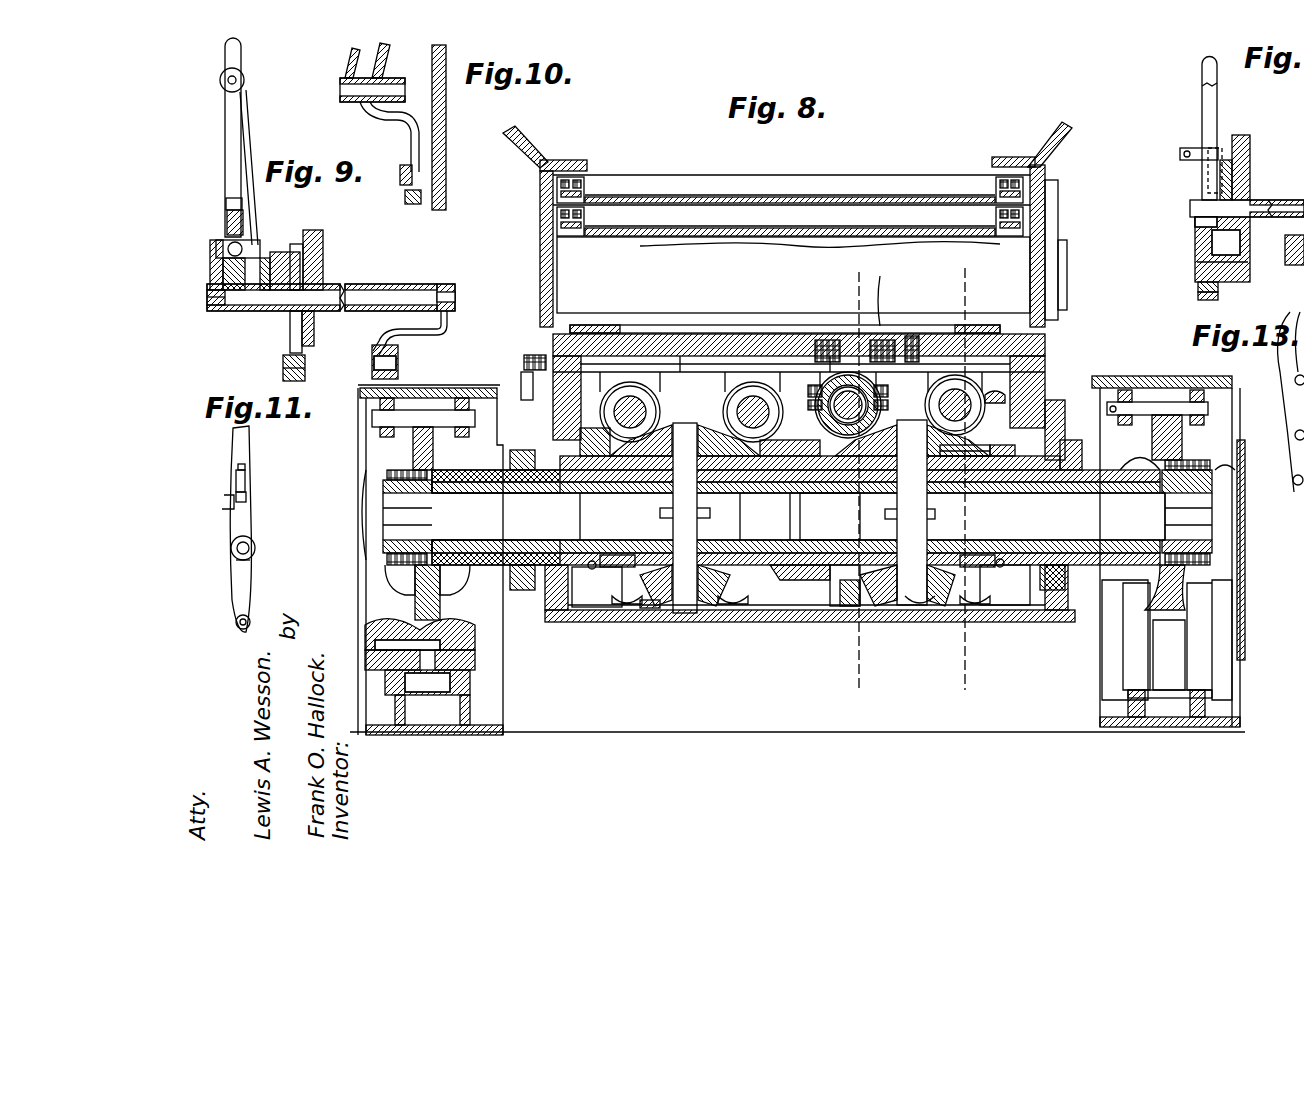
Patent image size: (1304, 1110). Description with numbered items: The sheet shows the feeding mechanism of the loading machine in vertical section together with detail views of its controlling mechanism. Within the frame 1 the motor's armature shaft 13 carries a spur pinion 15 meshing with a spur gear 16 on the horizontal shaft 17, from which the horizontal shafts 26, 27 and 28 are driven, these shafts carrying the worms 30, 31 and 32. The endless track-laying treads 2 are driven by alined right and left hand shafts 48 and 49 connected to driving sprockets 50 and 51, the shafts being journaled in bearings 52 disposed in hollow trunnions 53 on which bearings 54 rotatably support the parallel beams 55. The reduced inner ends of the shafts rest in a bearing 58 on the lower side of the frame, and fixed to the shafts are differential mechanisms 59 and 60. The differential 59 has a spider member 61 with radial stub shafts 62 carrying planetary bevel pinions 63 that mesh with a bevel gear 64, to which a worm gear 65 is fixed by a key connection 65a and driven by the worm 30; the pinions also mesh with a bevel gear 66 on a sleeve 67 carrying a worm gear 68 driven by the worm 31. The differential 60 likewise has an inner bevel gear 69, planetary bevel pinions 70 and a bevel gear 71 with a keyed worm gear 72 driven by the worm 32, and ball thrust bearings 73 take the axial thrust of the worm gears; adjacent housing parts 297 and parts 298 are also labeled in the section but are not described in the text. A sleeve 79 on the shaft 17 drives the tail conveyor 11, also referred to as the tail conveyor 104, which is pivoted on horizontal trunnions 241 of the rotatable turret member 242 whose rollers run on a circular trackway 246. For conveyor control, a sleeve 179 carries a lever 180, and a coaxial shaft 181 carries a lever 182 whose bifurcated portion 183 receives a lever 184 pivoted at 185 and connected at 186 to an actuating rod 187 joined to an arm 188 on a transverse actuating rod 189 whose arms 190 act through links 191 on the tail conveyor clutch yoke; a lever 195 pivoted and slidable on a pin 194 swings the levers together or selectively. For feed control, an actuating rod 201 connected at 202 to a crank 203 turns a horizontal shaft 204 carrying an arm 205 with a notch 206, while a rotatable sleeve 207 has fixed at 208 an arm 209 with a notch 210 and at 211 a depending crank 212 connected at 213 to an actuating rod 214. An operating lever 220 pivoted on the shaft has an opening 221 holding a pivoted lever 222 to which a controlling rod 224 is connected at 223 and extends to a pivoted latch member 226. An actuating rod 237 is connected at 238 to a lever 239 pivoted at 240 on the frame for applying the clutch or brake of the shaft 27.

In FIG. 8, the frame 1 is at (1046, 366).
In FIG. 9, the frame 1 is at (318, 232).
In FIG. 10, the frame 1 is at (438, 58).
In FIG. 12, the frame 1 is at (1244, 136).
In FIG. 8, the endless track-laying treads 2 is at (482, 733).
In FIG. 8, the tail conveyor 11 is at (541, 164).
In FIG. 8, the armature shaft 13 is at (826, 470).
In FIG. 8, the spur pinion 15 is at (798, 510).
In FIG. 8, the spur gear 16 is at (870, 290).
In FIG. 8, the horizontal shaft 17 is at (973, 290).
In FIG. 8, the horizontal shaft 26 is at (968, 398).
In FIG. 8, the horizontal shaft 27 is at (760, 400).
In FIG. 8, the horizontal shaft 28 is at (620, 396).
In FIG. 8, the worm 30 is at (1006, 400).
In FIG. 8, the worm 31 is at (753, 400).
In FIG. 8, the worm 32 is at (636, 396).
In FIG. 8, the right hand shaft 48 is at (1080, 566).
In FIG. 8, the left hand shaft 49 is at (506, 576).
In FIG. 8, the driving sprocket 50 is at (1182, 596).
In FIG. 8, the driving sprocket 51 is at (366, 592).
In FIG. 8, the bearings 52 is at (458, 540).
In FIG. 8, the hollow trunnions 53 is at (503, 582).
In FIG. 8, the bearings 54 is at (482, 460).
In FIG. 8, the parallel beams 55 is at (452, 456).
In FIG. 8, the bearing 58 is at (818, 572).
In FIG. 8, the differential mechanism 59 is at (896, 600).
In FIG. 8, the differential mechanism 60 is at (660, 612).
In FIG. 8, the spider member 61 is at (668, 440).
In FIG. 8, the radial stub shafts 62 is at (690, 442).
In FIG. 8, the planetary bevel pinions 63 is at (835, 662).
In FIG. 8, the bevel gear 64 is at (947, 592).
In FIG. 8, the worm gear 65 is at (986, 604).
In FIG. 8, the key connection 65a is at (976, 474).
In FIG. 8, the bevel gear 66 is at (836, 576).
In FIG. 8, the sleeve 67 is at (842, 566).
In FIG. 8, the worm gear 68 is at (748, 612).
In FIG. 8, the inner bevel gear 69 is at (698, 612).
In FIG. 8, the planetary bevel pinions 70 is at (660, 470).
In FIG. 8, the bevel gear 71 is at (624, 612).
In FIG. 8, the worm gear 72 is at (646, 610).
In FIG. 8, the ball thrust bearings 73 is at (592, 570).
In FIG. 8, the sleeve 79 is at (836, 406).
In FIG. 8, the tail conveyor 104 is at (1036, 181).
In FIG. 12, the sleeve 179 is at (1284, 202).
In FIG. 12, the lever 180 is at (1222, 180).
In FIG. 12, the shaft 181 is at (1215, 222).
In FIG. 13, the shaft 181 is at (1294, 380).
In FIG. 12, the lever 182 is at (1208, 180).
In FIG. 12, the bifurcated portion 183 is at (1250, 238).
In FIG. 12, the lever 184 is at (1200, 262).
In FIG. 12, the pivot 185 is at (1200, 286).
In FIG. 13, the pivot 185 is at (1294, 434).
In FIG. 12, the pivotal connection 186 is at (1191, 307).
In FIG. 13, the pivotal connection 186 is at (1294, 482).
In FIG. 12, the actuating rod 187 is at (1218, 294).
In FIG. 8, the arm 188 is at (526, 386).
In FIG. 8, the actuating rod 189 is at (707, 352).
In FIG. 8, the arms 190 is at (886, 346).
In FIG. 8, the links 191 is at (826, 350).
In FIG. 12, the pin 194 is at (1190, 148).
In FIG. 12, the lever 195 is at (1212, 112).
In FIG. 9, the actuating rod 201 is at (374, 352).
In FIG. 9, the pivotal connection 202 is at (392, 362).
In FIG. 9, the crank 203 is at (430, 333).
In FIG. 9, the horizontal shaft 204 is at (414, 295).
In FIG. 11, the horizontal shaft 204 is at (231, 550).
In FIG. 9, the arm 205 is at (212, 268).
In FIG. 11, the arm 205 is at (234, 520).
In FIG. 9, the notch 206 is at (216, 247).
In FIG. 11, the notch 206 is at (246, 498).
In FIG. 9, the rotatable sleeve 207 is at (368, 286).
In FIG. 9, the fixing point 208 is at (268, 300).
In FIG. 9, the arm 209 is at (266, 270).
In FIG. 9, the notch 210 is at (262, 252).
In FIG. 9, the fixing point 211 is at (290, 325).
In FIG. 9, the depending crank 212 is at (314, 322).
In FIG. 11, the depending crank 212 is at (252, 572).
In FIG. 9, the pivotal connection 213 is at (283, 368).
In FIG. 11, the pivotal connection 213 is at (248, 618).
In FIG. 9, the actuating rod 214 is at (304, 378).
In FIG. 9, the operating lever 220 is at (226, 165).
In FIG. 11, the operating lever 220 is at (234, 440).
In FIG. 9, the opening 221 is at (226, 218).
In FIG. 11, the opening 221 is at (246, 476).
In FIG. 9, the pivoted lever 222 is at (227, 228).
In FIG. 11, the pivoted lever 222 is at (236, 480).
In FIG. 9, the pivotal connection 223 is at (258, 238).
In FIG. 9, the controlling rod 224 is at (250, 140).
In FIG. 9, the pivoted latch member 226 is at (240, 77).
In FIG. 10, the actuating rod 237 is at (405, 194).
In FIG. 10, the pivotal connection 238 is at (400, 175).
In FIG. 10, the lever 239 is at (372, 120).
In FIG. 10, the pivot 240 is at (340, 91).
In FIG. 8, the horizontal trunnions 241 is at (577, 262).
In FIG. 8, the rotatable turret member 242 is at (786, 244).
In FIG. 8, the circular trackway 246 is at (1040, 318).
In FIG. 8, the block 297 is at (518, 450).
In FIG. 8, the block 298 is at (518, 565).